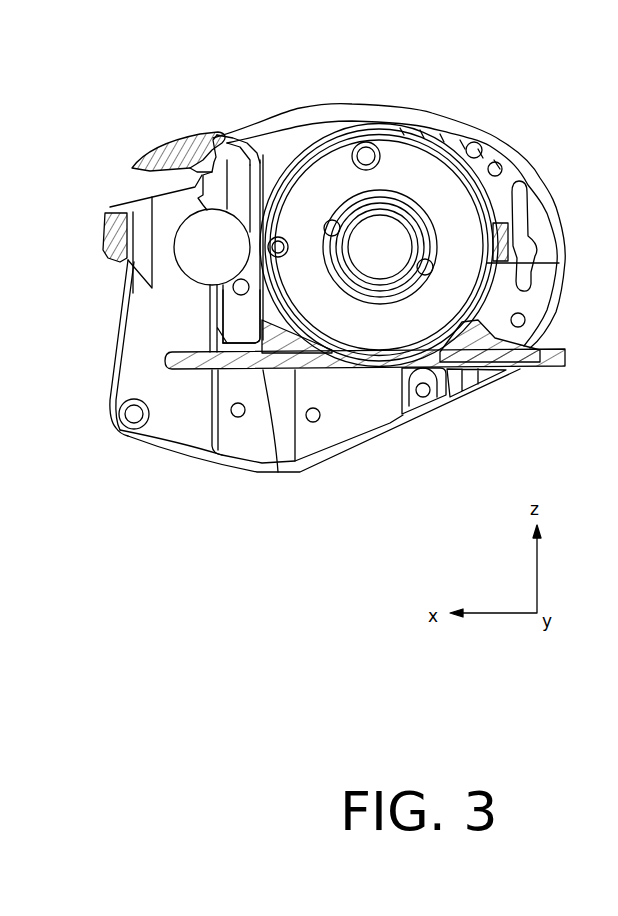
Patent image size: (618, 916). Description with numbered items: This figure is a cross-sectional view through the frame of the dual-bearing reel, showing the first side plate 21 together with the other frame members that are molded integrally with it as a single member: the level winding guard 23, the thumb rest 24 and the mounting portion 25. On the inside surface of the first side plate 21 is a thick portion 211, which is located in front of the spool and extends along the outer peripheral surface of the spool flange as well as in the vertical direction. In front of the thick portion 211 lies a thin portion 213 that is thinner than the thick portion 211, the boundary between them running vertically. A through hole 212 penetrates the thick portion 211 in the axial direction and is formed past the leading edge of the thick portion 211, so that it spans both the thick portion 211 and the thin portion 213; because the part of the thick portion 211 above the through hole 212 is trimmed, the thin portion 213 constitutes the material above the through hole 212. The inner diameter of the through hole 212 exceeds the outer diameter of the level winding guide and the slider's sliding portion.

The first side plate 21 is at (300, 114).
The thumb rest 24 is at (164, 145).
The through hole 212 is at (227, 219).
The thin portion 213 is at (187, 183).
The level winding guard 23 is at (100, 222).
The thick portion 211 is at (243, 304).
The mounting portion 25 is at (278, 472).